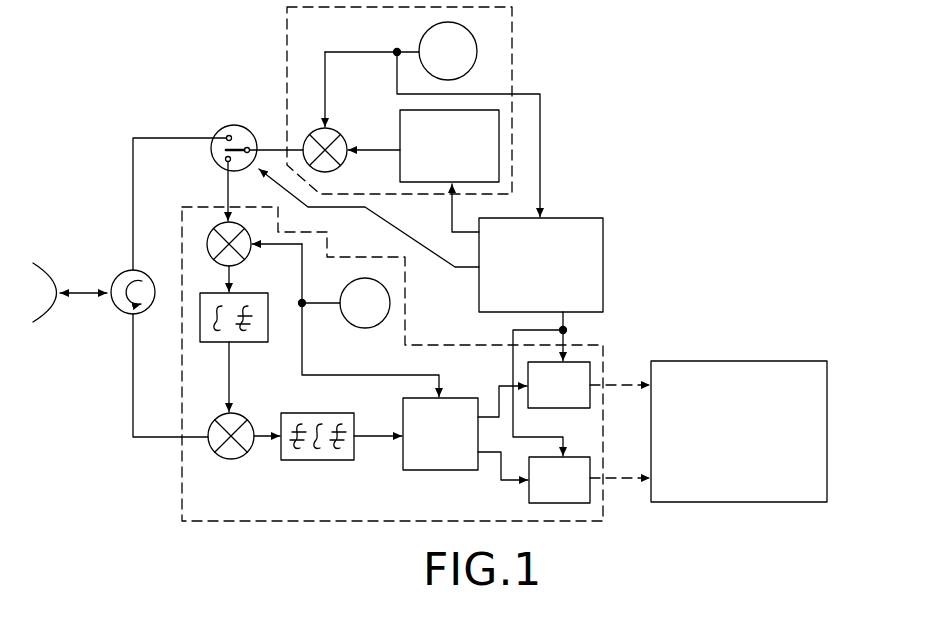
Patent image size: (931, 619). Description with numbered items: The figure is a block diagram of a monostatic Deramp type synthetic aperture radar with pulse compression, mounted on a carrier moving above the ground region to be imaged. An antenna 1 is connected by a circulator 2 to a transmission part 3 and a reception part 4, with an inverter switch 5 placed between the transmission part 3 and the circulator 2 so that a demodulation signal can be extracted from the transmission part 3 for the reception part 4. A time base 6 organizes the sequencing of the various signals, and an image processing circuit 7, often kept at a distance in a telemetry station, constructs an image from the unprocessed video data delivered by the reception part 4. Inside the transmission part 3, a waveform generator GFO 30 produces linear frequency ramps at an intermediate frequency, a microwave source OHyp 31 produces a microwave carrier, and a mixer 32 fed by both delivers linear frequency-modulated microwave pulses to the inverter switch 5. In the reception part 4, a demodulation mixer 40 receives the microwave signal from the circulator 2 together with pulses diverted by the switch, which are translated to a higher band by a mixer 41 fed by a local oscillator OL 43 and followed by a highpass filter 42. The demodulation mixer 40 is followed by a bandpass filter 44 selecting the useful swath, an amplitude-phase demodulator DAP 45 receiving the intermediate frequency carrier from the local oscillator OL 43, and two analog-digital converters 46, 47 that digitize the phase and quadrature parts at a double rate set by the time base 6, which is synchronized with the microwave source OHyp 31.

The antenna 1 is at (40, 262).
The circulator 2 is at (121, 271).
The transmission part 3 is at (287, 38).
The reception part 4 is at (355, 522).
The inverter switch 5 is at (240, 125).
The time base 6 is at (603, 252).
The image processing circuit 7 is at (760, 361).
The waveform generator GFO 30 is at (499, 130).
The microwave source OHyp 31 is at (477, 45).
The mixer 32 is at (340, 135).
The demodulation mixer 40 is at (227, 459).
The mixer 41 is at (208, 233).
The highpass filter 42 is at (255, 342).
The local oscillator OL 43 is at (390, 303).
The bandpass filter 44 is at (312, 460).
The amplitude-phase demodulator DAP 45 is at (435, 470).
The analog-digital converter 46 is at (582, 368).
The analog-digital converter 47 is at (568, 497).